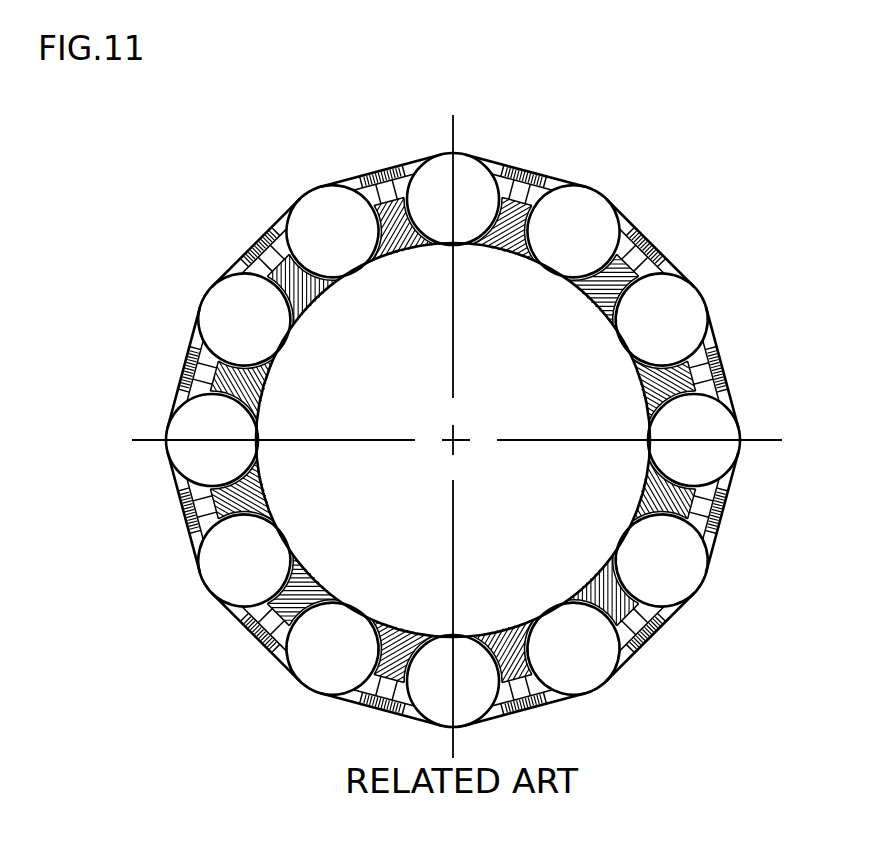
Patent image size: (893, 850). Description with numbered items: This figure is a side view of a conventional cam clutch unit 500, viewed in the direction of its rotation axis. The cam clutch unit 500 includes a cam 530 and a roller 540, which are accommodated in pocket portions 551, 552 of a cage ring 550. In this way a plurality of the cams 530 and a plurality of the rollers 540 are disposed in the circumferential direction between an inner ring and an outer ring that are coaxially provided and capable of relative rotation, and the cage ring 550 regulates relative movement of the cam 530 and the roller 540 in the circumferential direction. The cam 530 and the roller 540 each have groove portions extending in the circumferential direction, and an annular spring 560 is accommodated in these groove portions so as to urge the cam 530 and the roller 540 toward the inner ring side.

The cam clutch unit 500 is at (178, 145).
The cam 530 is at (438, 192).
The roller 540 is at (585, 212).
The cage ring 550 is at (247, 243).
The pocket portion 551 is at (264, 213).
The pocket portion 552 is at (649, 220).
The annular spring 560 is at (526, 195).